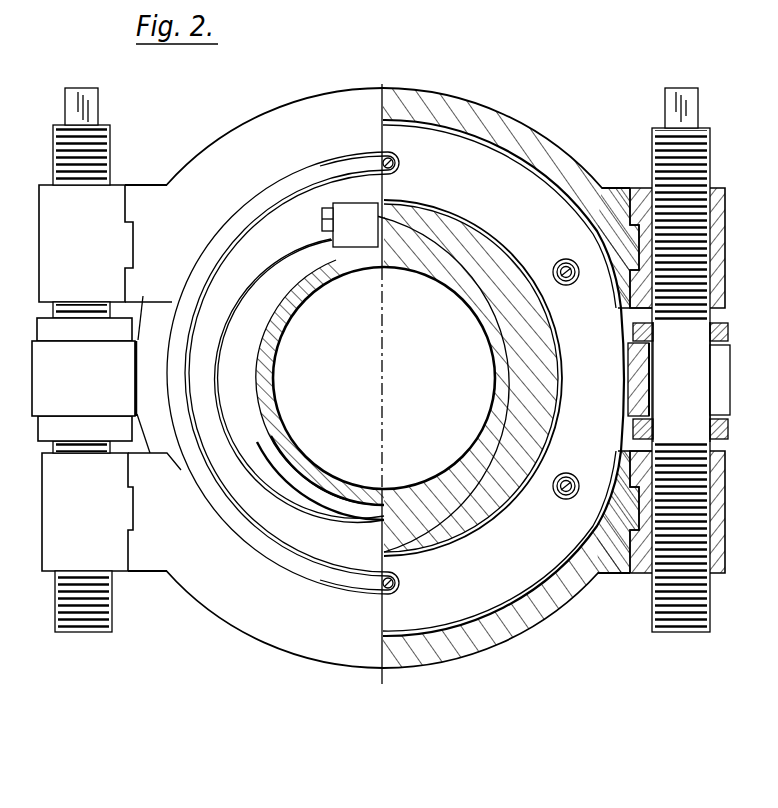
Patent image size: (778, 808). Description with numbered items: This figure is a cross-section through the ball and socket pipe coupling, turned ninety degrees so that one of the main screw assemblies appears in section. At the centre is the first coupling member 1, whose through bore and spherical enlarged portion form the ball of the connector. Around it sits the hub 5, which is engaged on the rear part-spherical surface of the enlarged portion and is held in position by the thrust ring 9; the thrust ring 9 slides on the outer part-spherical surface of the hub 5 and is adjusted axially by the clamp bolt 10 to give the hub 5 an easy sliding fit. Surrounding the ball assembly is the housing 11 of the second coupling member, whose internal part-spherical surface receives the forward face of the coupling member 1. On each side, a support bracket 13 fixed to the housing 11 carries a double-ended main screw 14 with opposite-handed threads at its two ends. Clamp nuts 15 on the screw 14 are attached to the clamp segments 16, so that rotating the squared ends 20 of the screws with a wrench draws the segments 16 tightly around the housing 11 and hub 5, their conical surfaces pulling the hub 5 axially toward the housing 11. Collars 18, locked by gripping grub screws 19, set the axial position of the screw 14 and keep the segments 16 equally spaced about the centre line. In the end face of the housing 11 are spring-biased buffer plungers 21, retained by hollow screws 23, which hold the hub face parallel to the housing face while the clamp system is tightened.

The first coupling member 1 is at (448, 267).
The hub 5 is at (265, 557).
The thrust ring 9 is at (264, 312).
The clamp bolt 10 is at (336, 236).
The housing 11 is at (495, 177).
The support bracket 13 is at (136, 417).
The main screw 14 is at (100, 151).
The clamp nut 15 is at (85, 234).
The clamp segment 16 is at (322, 104).
The collar 18 is at (112, 329).
The gripping grub screw 19 is at (725, 328).
The squared end 20 is at (90, 103).
The buffer plunger 21 is at (568, 473).
The hollow screw 23 is at (559, 495).